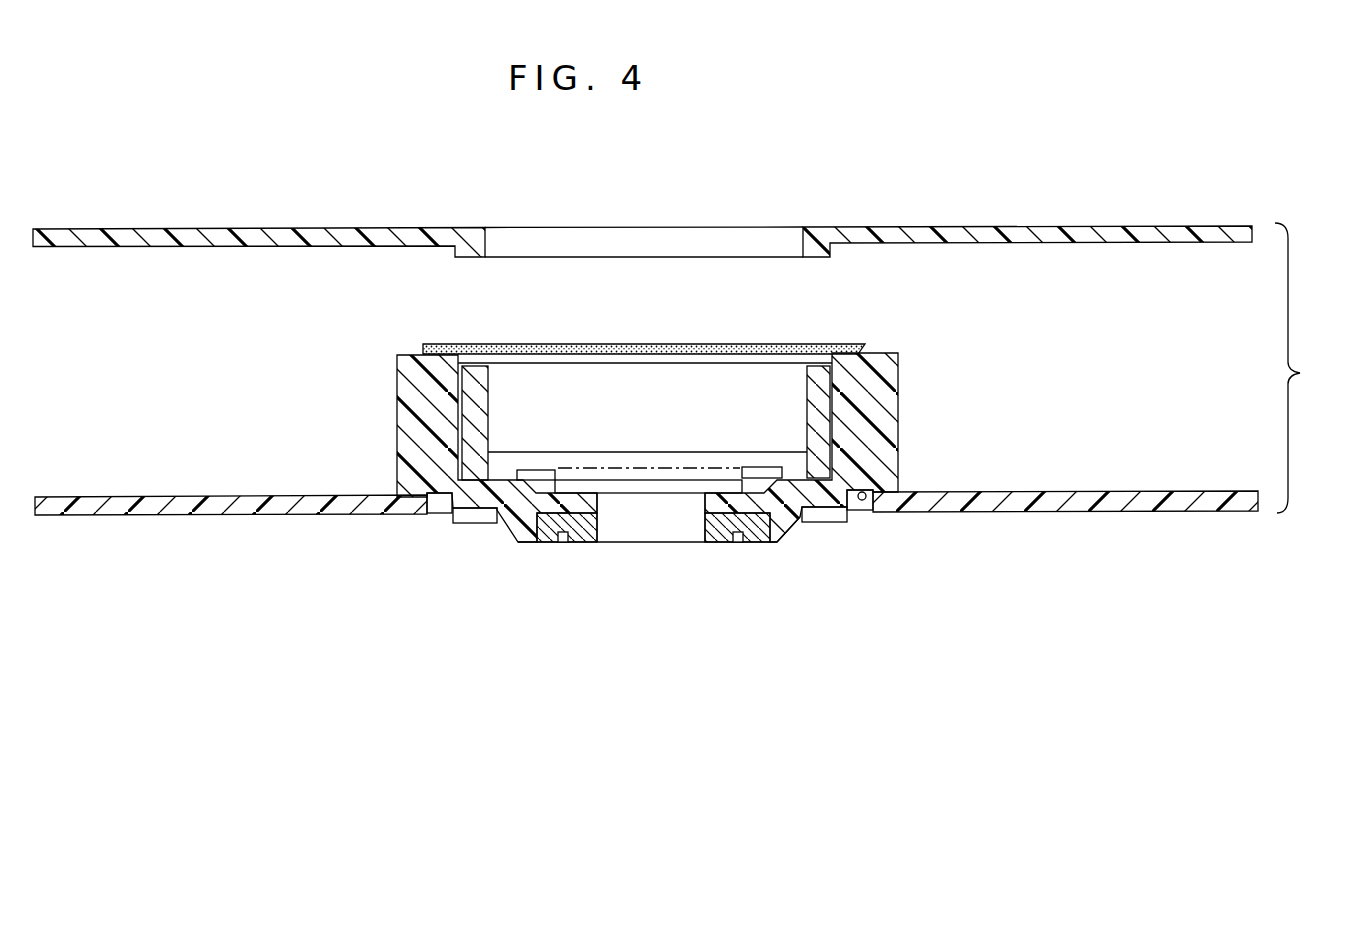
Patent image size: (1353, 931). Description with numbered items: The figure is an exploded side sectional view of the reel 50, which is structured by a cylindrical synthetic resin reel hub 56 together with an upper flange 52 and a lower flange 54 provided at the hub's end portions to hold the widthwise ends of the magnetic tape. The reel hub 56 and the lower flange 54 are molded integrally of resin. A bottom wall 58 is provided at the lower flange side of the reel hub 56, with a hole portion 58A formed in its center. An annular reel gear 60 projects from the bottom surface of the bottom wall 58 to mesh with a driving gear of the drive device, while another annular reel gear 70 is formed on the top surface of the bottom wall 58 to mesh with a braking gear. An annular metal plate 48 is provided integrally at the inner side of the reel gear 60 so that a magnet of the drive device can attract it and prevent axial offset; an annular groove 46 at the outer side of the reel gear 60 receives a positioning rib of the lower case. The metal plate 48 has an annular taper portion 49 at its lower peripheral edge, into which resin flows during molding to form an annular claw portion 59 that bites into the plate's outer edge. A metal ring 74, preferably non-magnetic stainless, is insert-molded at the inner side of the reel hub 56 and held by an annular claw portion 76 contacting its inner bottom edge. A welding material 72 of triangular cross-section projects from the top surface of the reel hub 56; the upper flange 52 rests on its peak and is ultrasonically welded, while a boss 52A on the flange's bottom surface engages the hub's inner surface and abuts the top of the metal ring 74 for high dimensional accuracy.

The annular groove 46 is at (858, 493).
The metal plate 48 is at (722, 523).
The taper portion 49 is at (770, 532).
The reel 50 is at (1308, 368).
The upper flange 52 is at (1118, 227).
The boss 52A is at (818, 258).
The lower flange 54 is at (1085, 500).
The reel hub 56 is at (890, 438).
The bottom wall 58 is at (541, 540).
The hole portion 58A is at (608, 527).
The claw portion 59 is at (792, 532).
The reel gear 60 is at (838, 522).
The reel gear 70 is at (765, 467).
The welding material 72 is at (862, 345).
The metal ring 74 is at (818, 393).
The claw portion 76 is at (497, 472).